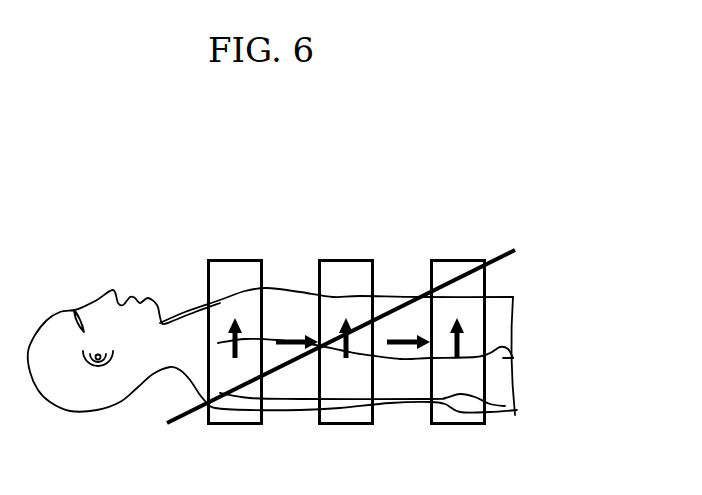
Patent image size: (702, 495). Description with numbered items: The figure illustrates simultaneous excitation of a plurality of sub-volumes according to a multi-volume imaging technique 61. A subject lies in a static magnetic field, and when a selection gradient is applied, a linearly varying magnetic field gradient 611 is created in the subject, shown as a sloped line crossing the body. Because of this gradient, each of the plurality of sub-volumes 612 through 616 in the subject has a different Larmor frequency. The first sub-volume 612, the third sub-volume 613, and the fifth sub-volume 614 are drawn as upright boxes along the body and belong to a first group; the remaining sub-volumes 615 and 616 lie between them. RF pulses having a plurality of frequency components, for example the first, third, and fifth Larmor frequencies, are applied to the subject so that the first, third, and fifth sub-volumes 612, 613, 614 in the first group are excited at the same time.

The multi-volume imaging technique 61 is at (451, 161).
The linearly varying magnetic field gradient 611 is at (514, 257).
The first sub-volume 612 is at (237, 258).
The third sub-volume 613 is at (352, 258).
The fifth sub-volume 614 is at (463, 258).
The sub-volume 615 is at (290, 383).
The sub-volume 616 is at (402, 383).